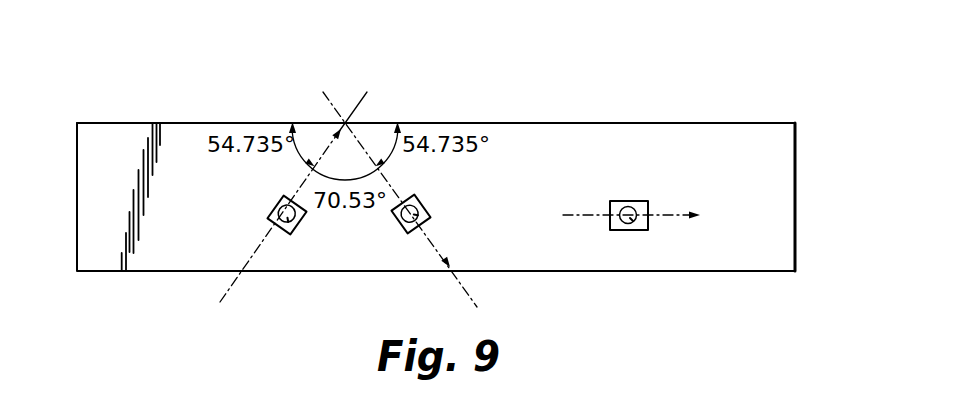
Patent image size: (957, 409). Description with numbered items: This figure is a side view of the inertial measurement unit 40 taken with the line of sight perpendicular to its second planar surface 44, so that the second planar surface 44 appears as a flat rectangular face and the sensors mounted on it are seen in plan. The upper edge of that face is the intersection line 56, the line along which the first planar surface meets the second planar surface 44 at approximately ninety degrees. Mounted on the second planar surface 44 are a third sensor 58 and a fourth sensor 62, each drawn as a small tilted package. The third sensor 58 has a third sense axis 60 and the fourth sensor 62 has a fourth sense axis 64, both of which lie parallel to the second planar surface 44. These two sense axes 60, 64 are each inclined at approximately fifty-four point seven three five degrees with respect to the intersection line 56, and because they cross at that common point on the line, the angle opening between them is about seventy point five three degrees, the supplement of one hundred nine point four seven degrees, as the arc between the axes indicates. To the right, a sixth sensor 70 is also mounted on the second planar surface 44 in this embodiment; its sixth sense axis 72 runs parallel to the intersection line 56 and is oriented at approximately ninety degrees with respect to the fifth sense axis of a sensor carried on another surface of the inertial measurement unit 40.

The inertial measurement unit 40 is at (693, 91).
The second planar surface 44 is at (191, 160).
The intersection line 56 is at (556, 123).
The third sensor 58 is at (272, 217).
The third sense axis 60 is at (245, 278).
The fourth sensor 62 is at (427, 208).
The fourth sense axis 64 is at (428, 239).
The sixth sensor 70 is at (638, 205).
The sixth sense axis 72 is at (565, 215).